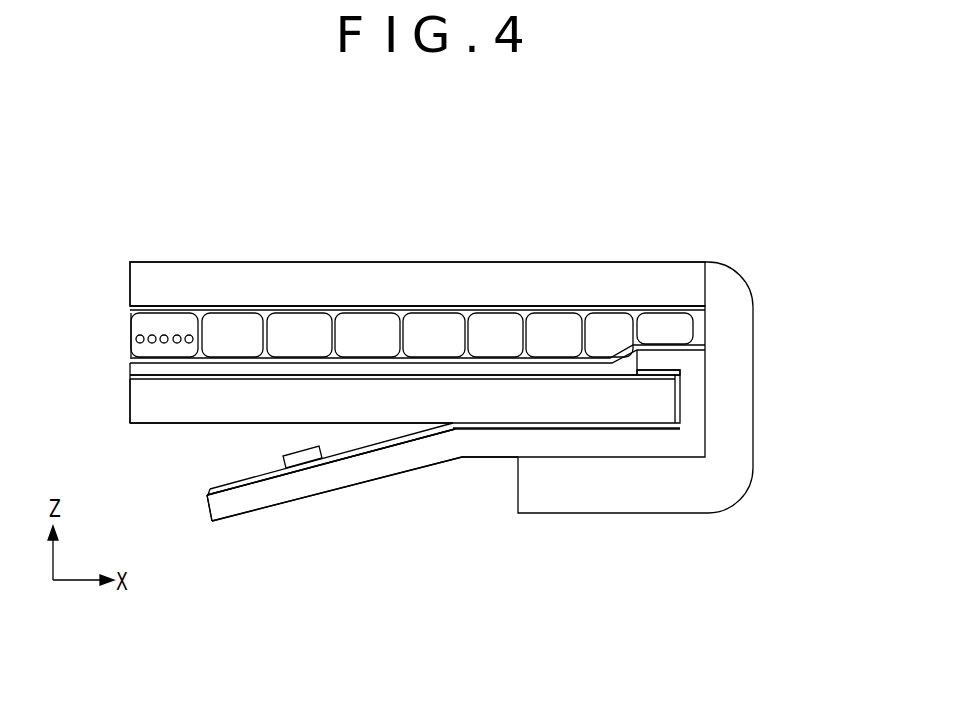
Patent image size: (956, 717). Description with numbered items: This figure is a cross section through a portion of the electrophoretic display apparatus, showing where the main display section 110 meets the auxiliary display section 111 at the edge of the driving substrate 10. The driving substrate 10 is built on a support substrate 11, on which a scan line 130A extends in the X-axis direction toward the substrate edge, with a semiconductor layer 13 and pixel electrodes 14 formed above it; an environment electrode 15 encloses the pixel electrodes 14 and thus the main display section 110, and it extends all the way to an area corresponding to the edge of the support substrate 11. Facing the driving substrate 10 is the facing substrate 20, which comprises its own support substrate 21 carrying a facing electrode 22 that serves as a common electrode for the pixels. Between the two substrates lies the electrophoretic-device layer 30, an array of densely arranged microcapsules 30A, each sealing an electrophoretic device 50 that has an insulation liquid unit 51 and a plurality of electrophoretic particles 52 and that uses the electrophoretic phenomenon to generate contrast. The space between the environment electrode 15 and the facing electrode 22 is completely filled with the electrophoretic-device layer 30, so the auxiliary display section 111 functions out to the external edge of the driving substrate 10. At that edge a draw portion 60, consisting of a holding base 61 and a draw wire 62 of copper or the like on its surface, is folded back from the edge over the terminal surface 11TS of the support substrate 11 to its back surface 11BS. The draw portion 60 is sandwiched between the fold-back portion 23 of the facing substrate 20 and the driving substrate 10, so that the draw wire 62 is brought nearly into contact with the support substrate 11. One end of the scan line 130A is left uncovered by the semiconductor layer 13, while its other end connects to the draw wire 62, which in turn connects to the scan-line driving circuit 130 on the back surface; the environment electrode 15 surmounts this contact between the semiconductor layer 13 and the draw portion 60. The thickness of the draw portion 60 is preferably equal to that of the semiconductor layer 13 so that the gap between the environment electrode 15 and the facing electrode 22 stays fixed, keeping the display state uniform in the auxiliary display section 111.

The driving substrate 10 is at (616, 596).
The support substrate 11 is at (593, 400).
The terminal surface of the support substrate 11TS is at (675, 408).
The back surface of the support substrate 11BS is at (263, 425).
The semiconductor layer 13 is at (239, 376).
The pixel electrode 14 is at (207, 376).
The environment electrode 15 is at (544, 357).
The facing substrate 20 is at (378, 202).
The support substrate of the facing substrate 21 is at (386, 262).
The facing electrode 22 is at (432, 306).
The fold-back portion 23 is at (768, 423).
The electrophoretic-device layer 30 is at (112, 318).
The microcapsule 30A is at (125, 316).
The electrophoretic device 50 is at (205, 202).
The insulation liquid unit 51 is at (154, 331).
The electrophoretic particles 52 is at (178, 334).
The draw portion 60 is at (362, 573).
The holding base 61 is at (377, 463).
The draw wire 62 is at (490, 430).
The main display section 110 is at (332, 118).
The auxiliary display section 111 is at (705, 118).
The scan-line driving circuit 130 is at (313, 461).
The scan line 130A is at (155, 387).